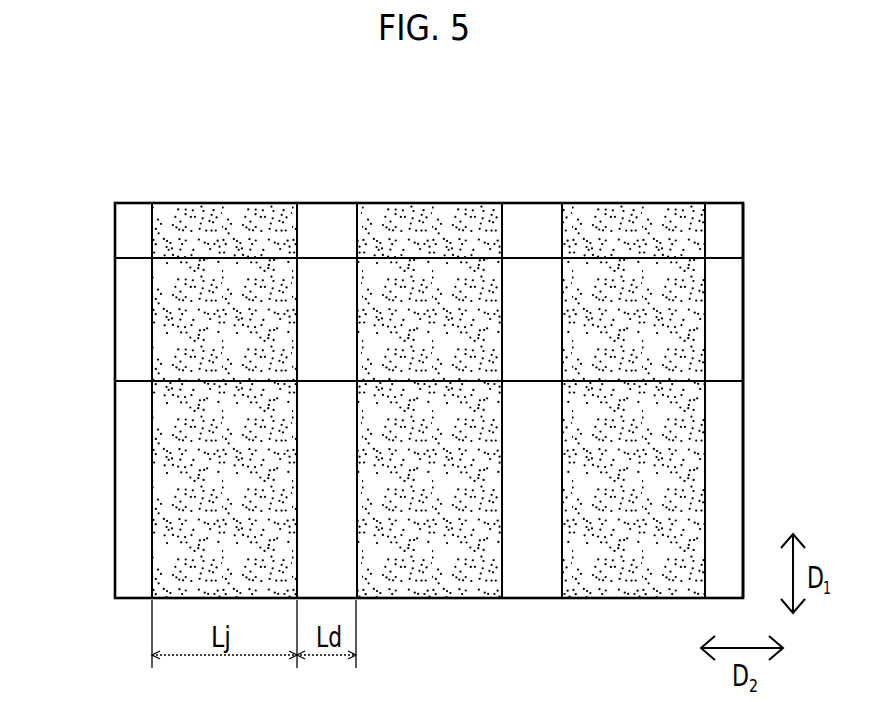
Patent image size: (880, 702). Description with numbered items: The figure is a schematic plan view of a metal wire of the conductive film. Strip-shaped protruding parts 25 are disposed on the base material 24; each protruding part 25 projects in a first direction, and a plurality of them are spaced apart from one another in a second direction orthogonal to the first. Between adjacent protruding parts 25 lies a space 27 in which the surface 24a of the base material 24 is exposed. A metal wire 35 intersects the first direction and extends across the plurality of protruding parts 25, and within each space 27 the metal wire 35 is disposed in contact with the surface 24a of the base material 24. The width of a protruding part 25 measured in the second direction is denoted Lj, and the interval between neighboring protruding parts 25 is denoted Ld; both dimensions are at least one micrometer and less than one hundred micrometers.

The base material 24 is at (723, 224).
The surface of the base material 24a is at (722, 494).
The protruding part 25 is at (224, 226).
The space 27 is at (327, 226).
The metal wire 35 is at (128, 288).